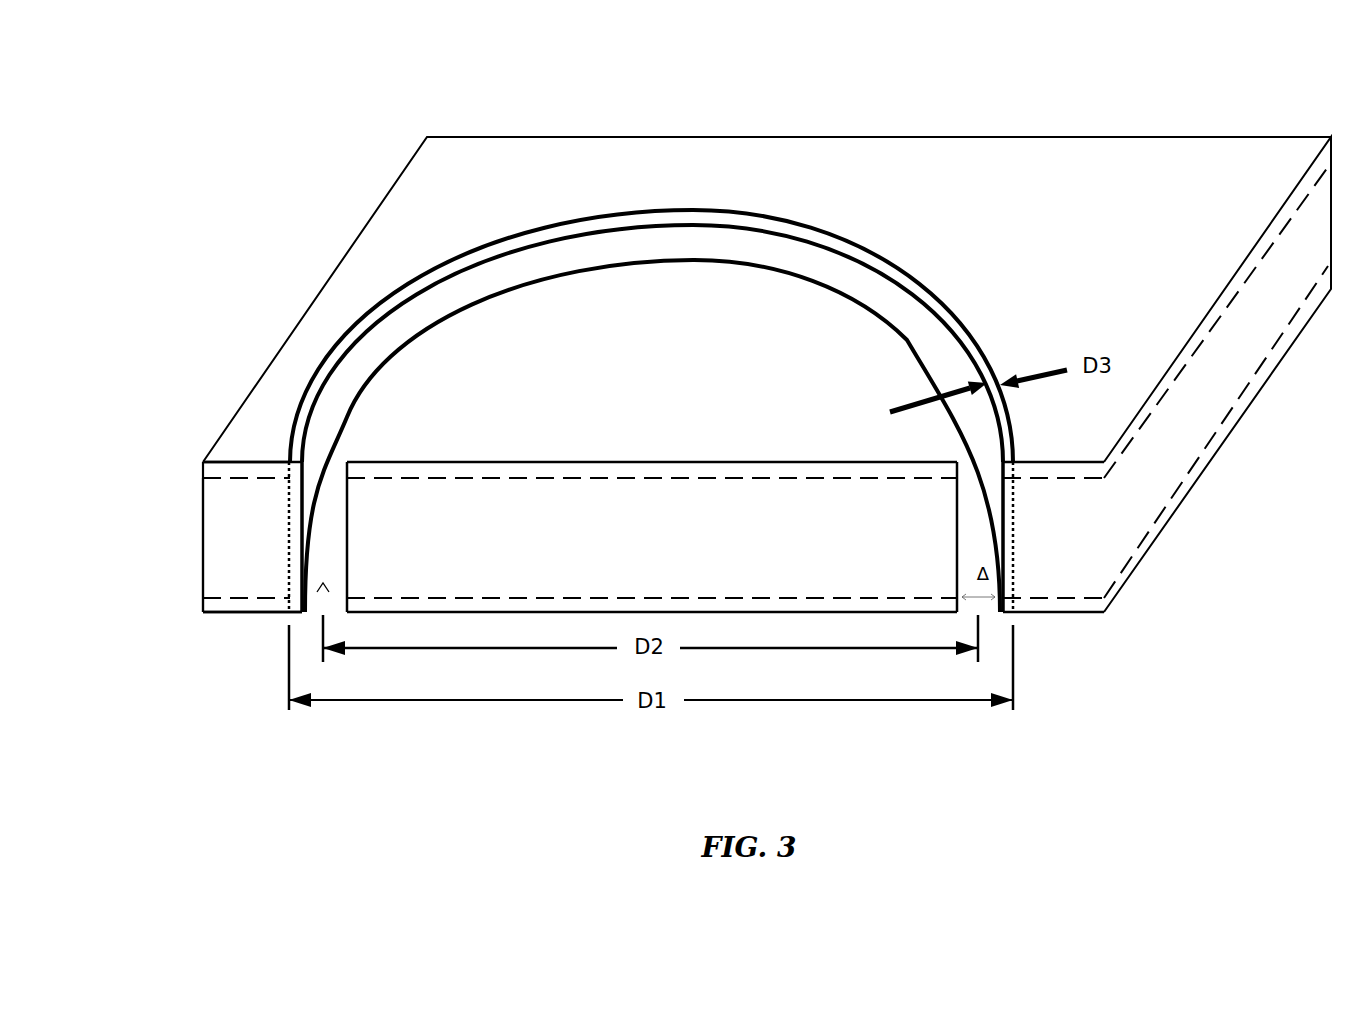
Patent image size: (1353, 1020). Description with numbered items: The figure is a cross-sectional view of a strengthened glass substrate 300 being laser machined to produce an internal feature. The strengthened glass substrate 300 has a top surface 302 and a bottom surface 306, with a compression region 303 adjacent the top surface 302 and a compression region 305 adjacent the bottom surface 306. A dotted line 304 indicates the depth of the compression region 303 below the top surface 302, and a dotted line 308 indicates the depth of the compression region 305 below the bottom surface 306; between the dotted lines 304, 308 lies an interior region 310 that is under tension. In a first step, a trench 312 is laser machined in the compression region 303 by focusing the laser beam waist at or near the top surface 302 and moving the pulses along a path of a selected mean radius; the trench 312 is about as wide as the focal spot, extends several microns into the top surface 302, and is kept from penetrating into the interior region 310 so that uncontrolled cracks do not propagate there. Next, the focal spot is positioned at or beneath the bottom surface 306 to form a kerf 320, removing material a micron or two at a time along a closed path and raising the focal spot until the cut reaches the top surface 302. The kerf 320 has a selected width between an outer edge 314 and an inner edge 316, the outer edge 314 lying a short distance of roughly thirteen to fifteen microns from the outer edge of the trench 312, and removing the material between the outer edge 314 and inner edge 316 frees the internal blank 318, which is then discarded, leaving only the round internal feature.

The strengthened glass substrate 300 is at (311, 150).
The top surface 302 is at (240, 407).
The compression region 303 is at (200, 463).
The dotted line 304 is at (213, 478).
The compression region 305 is at (206, 611).
The bottom surface 306 is at (224, 611).
The dotted line 308 is at (208, 598).
The interior region 310 is at (235, 536).
The trench 312 is at (730, 207).
The outer edge 314 is at (858, 257).
The inner edge 316 is at (892, 325).
The internal blank 318 is at (688, 381).
The kerf 320 is at (323, 585).